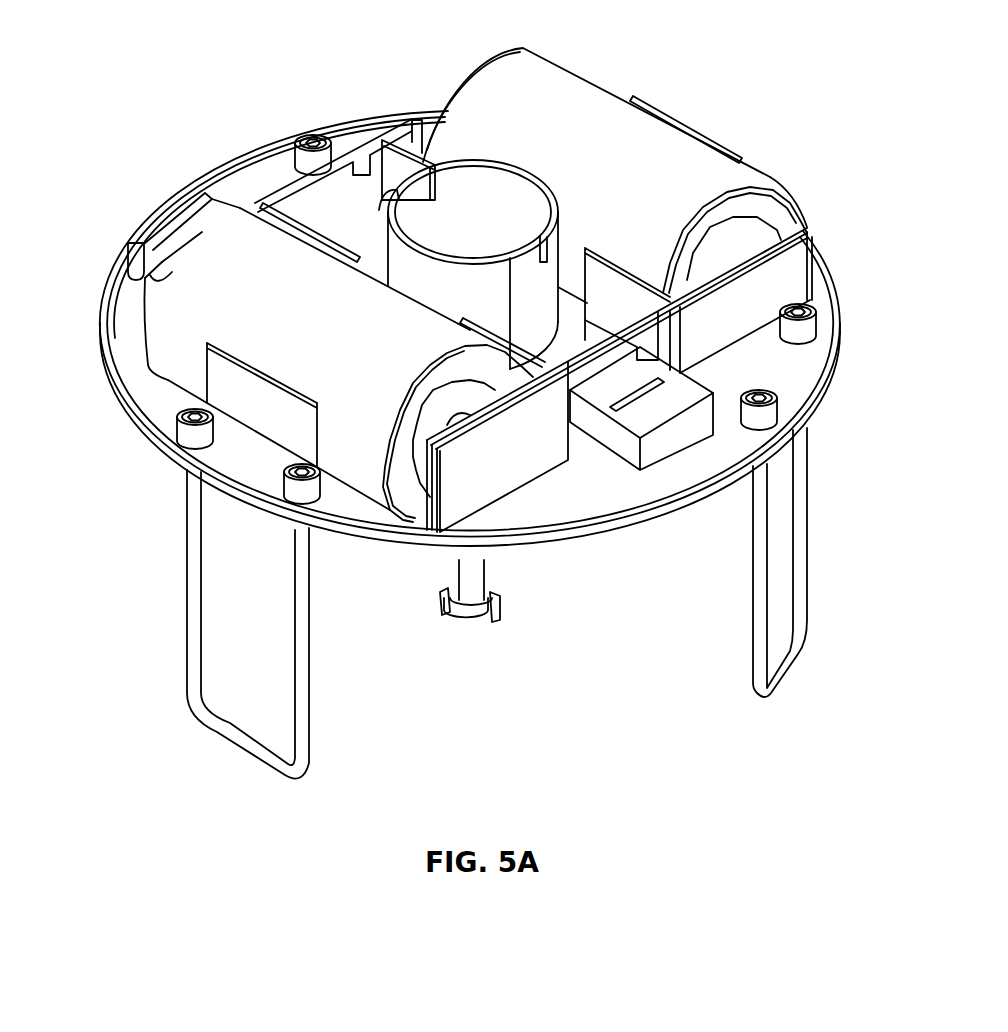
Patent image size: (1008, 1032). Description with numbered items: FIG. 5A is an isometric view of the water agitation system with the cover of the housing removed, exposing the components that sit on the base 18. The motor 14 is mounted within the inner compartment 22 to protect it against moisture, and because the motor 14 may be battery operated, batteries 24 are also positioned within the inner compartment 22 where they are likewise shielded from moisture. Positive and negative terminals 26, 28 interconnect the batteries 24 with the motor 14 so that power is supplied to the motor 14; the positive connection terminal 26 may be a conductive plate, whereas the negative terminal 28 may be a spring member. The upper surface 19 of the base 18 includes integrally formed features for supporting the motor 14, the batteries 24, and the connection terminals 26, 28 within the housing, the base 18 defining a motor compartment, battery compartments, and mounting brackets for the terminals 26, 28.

The motor 14 is at (515, 210).
The base 18 is at (847, 333).
The upper surface 19 is at (830, 275).
The inner compartment 22 is at (360, 148).
The batteries 24 is at (697, 158).
The positive connection terminal 26 is at (658, 340).
The negative terminal 28 is at (404, 127).